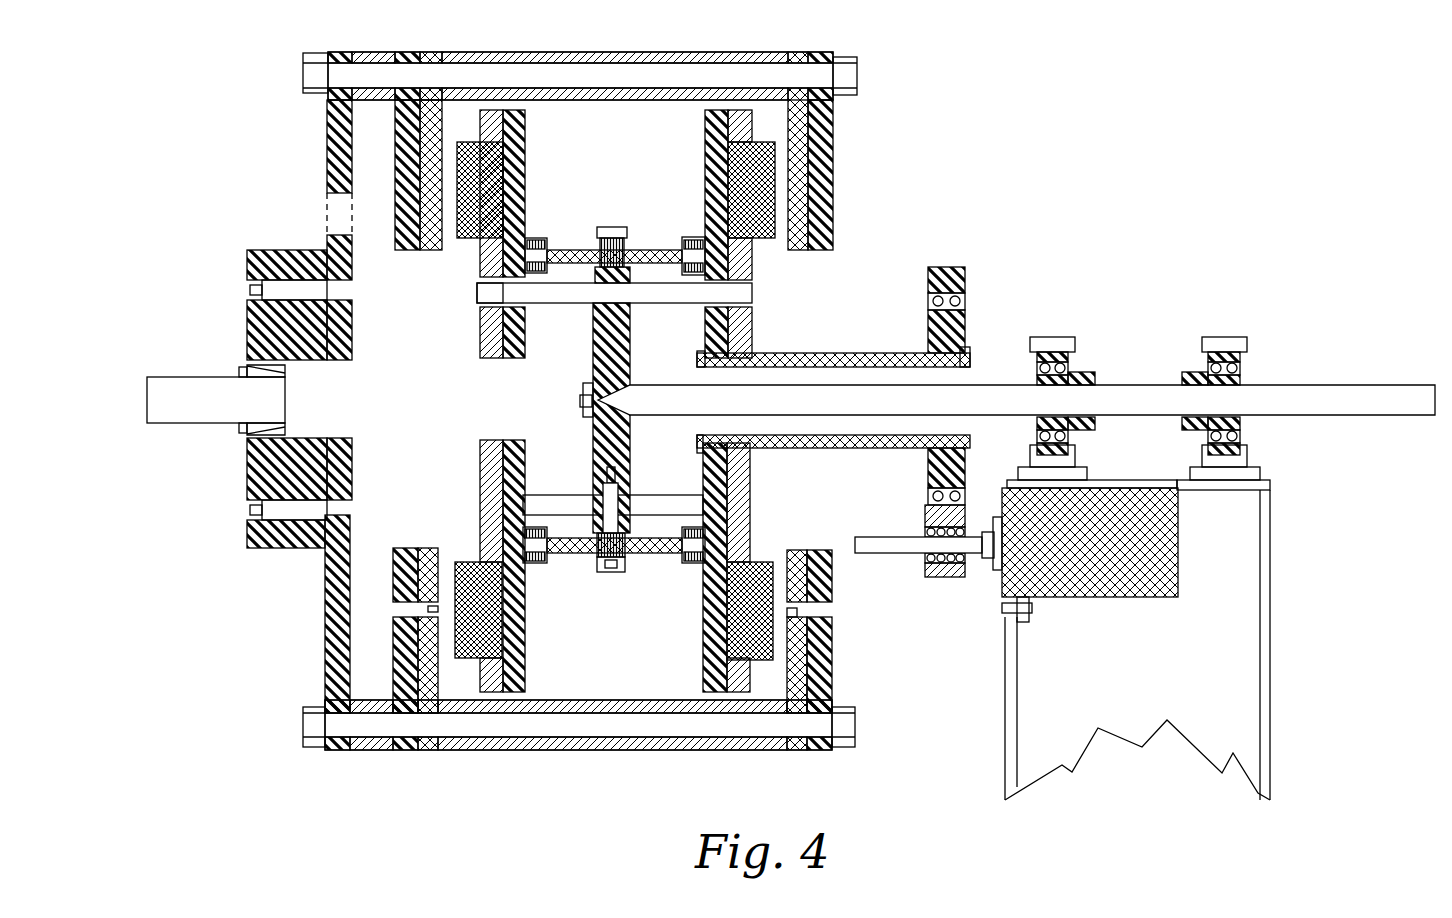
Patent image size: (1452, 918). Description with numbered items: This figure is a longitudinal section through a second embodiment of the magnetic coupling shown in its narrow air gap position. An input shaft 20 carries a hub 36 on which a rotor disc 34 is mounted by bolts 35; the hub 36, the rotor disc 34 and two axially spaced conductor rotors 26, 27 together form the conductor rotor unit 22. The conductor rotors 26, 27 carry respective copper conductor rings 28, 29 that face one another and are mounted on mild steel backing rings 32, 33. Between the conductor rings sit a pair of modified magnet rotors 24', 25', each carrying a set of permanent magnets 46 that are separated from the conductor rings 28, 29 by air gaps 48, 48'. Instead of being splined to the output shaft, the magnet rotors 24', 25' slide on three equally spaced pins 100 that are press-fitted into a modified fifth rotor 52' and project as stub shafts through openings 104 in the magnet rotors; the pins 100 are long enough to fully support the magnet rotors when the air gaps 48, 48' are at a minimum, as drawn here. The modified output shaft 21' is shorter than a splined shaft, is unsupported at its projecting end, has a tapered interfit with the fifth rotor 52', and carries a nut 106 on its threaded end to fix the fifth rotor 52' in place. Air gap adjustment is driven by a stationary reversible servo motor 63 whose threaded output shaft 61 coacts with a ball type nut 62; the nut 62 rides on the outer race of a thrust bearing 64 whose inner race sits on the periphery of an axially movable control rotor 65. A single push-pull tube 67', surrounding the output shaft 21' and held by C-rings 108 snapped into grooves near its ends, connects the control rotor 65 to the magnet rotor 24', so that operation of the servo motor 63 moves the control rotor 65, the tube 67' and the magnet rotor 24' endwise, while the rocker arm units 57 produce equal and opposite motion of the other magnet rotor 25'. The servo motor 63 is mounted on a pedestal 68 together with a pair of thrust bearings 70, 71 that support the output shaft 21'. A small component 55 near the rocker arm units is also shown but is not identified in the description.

The input shaft 20 is at (200, 382).
The modified output shaft 21' is at (1016, 367).
The conductor rotor unit 22 is at (318, 142).
The modified magnet rotor 24' is at (687, 234).
The modified magnet rotor 25' is at (551, 231).
The conductor rotor 26 is at (840, 142).
The conductor rotor 27 is at (395, 188).
The conductor ring 28 is at (797, 52).
The conductor ring 29 is at (430, 52).
The backing ring 32 is at (832, 214).
The backing ring 33 is at (405, 252).
The rotor disc 34 is at (325, 625).
The bolts 35 is at (255, 284).
The hub 36 is at (250, 466).
The permanent magnets 46 is at (462, 565).
The air gap 48 is at (764, 226).
The air gap 48' is at (458, 220).
The modified fifth rotor 52' is at (561, 418).
The adjusting screw 55 is at (612, 227).
The rocker arm units 57 is at (585, 560).
The servo motor output shaft 61 is at (895, 555).
The ball type nut 62 is at (968, 555).
The reversible servo motor 63 is at (1120, 580).
The thrust bearing 64 is at (928, 502).
The control rotor 65 is at (930, 325).
The push-pull tube 67' is at (833, 330).
The pedestal 68 is at (1270, 545).
The thrust bearing 70 is at (1072, 352).
The thrust bearing 71 is at (1245, 352).
The pins 100 is at (553, 305).
The openings 104 is at (470, 292).
The nut 106 is at (590, 415).
The C-rings 108 is at (700, 350).